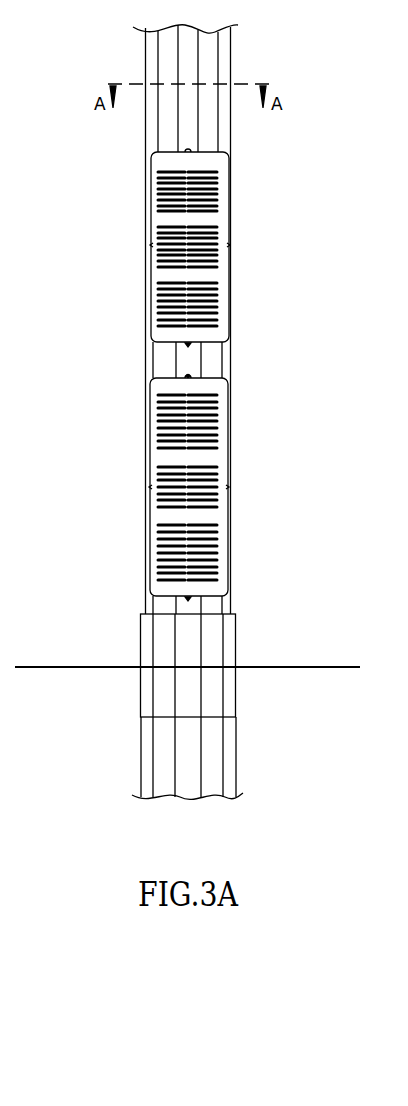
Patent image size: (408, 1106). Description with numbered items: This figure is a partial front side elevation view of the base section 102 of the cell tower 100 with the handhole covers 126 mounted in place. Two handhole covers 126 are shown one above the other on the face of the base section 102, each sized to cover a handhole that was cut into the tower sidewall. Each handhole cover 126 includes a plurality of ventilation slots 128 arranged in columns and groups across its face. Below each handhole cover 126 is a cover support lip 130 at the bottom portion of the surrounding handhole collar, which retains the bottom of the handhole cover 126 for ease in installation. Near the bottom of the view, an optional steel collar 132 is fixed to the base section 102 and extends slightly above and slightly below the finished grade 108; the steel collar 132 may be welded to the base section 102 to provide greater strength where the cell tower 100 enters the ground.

The cell tower 100 is at (72, 234).
The base section 102 is at (228, 748).
The finished grade 108 is at (287, 666).
The handhole cover 126 is at (212, 160).
The ventilation slots 128 is at (205, 222).
The cover support lip 130 is at (205, 345).
The steel collar 132 is at (148, 640).